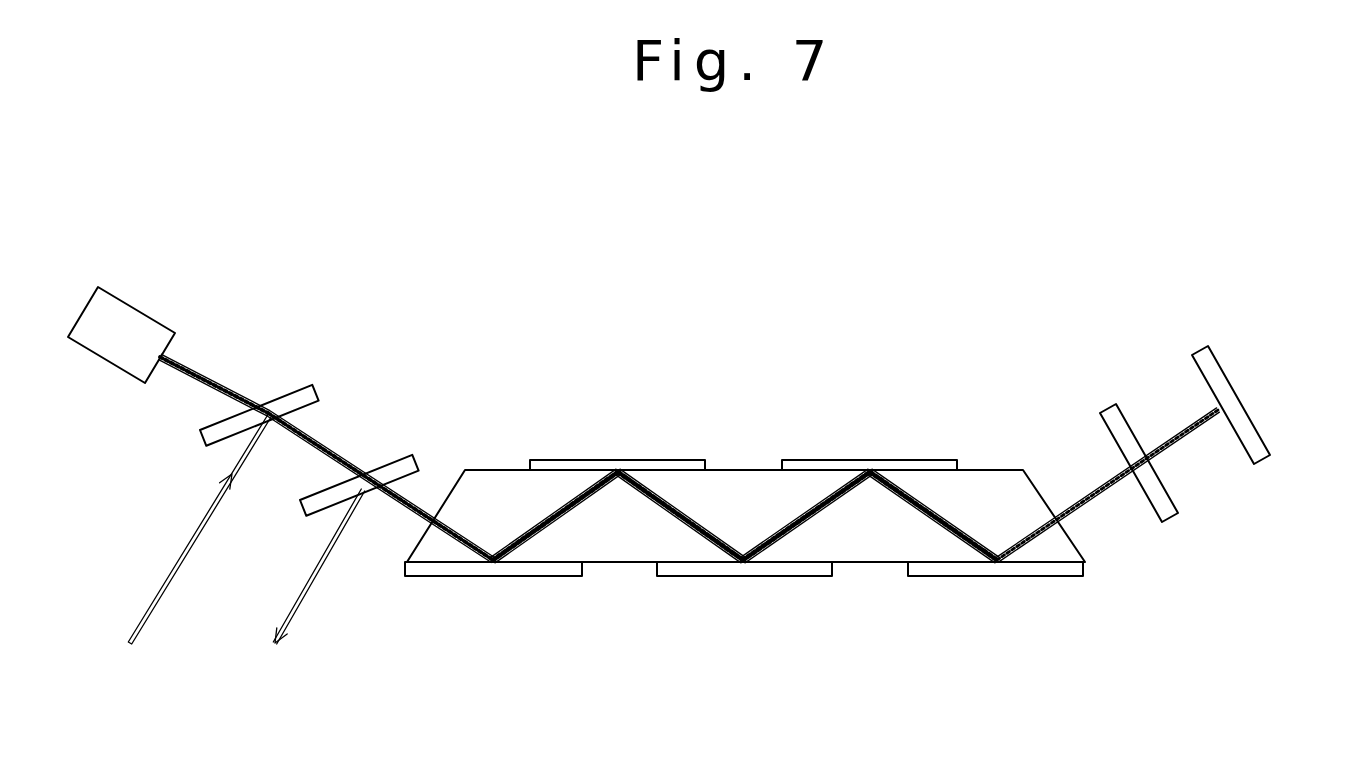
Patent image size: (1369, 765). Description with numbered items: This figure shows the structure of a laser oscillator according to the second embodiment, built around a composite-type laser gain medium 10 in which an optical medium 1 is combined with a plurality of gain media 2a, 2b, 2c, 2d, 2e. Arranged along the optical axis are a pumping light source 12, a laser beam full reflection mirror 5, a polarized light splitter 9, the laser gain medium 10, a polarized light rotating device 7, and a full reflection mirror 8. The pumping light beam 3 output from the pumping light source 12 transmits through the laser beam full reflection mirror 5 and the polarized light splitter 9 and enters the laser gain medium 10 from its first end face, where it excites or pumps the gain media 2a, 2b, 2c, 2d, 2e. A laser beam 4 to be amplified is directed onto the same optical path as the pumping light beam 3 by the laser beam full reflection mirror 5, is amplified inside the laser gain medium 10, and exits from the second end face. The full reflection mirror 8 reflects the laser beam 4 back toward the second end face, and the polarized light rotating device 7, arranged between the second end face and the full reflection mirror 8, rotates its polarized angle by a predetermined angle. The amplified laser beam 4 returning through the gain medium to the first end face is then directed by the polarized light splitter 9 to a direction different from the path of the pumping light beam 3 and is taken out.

The optical medium 1 is at (1007, 490).
The gain medium 2a is at (493, 578).
The gain medium 2b is at (617, 460).
The gain medium 2c is at (773, 578).
The gain medium 2d is at (870, 458).
The gain medium 2e is at (995, 578).
The pumping light beam 3 is at (192, 383).
The laser beam 4 is at (150, 612).
The laser beam full reflection mirror 5 is at (278, 405).
The polarized light rotating device 7 is at (1170, 492).
The full reflection mirror 8 is at (1262, 435).
The polarized light splitter 9 is at (393, 450).
The laser gain medium 10 is at (745, 552).
The pumping light source 12 is at (128, 322).